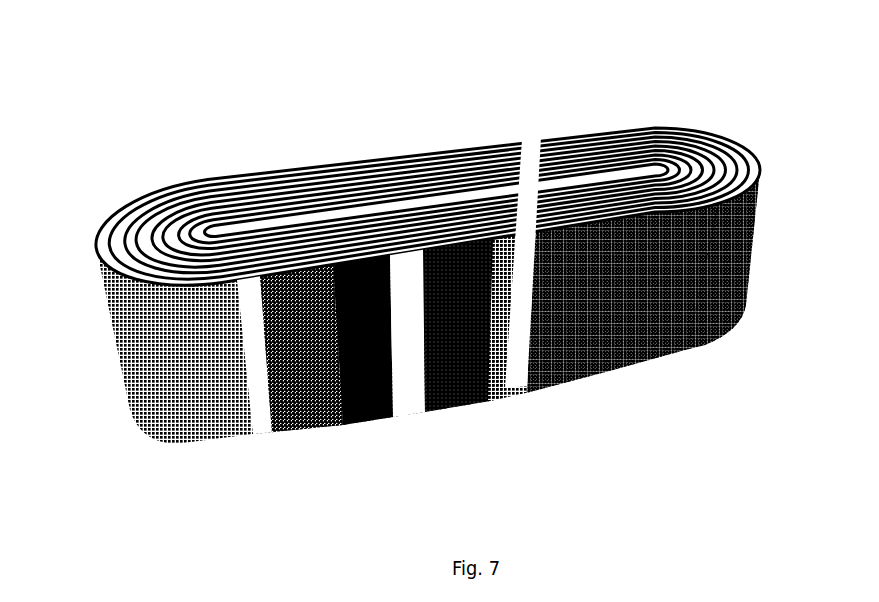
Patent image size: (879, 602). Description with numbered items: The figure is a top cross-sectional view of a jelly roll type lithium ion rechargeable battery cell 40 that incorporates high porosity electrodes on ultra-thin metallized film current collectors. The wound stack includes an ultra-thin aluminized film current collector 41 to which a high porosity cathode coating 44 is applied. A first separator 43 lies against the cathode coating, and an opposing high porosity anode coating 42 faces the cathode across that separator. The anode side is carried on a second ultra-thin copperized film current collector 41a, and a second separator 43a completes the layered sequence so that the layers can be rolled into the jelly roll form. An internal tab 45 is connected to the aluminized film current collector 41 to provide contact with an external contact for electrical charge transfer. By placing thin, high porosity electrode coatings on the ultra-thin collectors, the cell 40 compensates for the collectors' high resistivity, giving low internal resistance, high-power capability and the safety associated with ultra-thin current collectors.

The battery cell 40 is at (157, 150).
The aluminized film current collector 41 is at (620, 352).
The copperized film current collector 41a is at (306, 430).
The high porosity anode coating 42 is at (368, 423).
The first separator 43 is at (407, 413).
The second separator 43a is at (265, 432).
The high porosity cathode coating 44 is at (475, 414).
The internal tab 45 is at (529, 149).